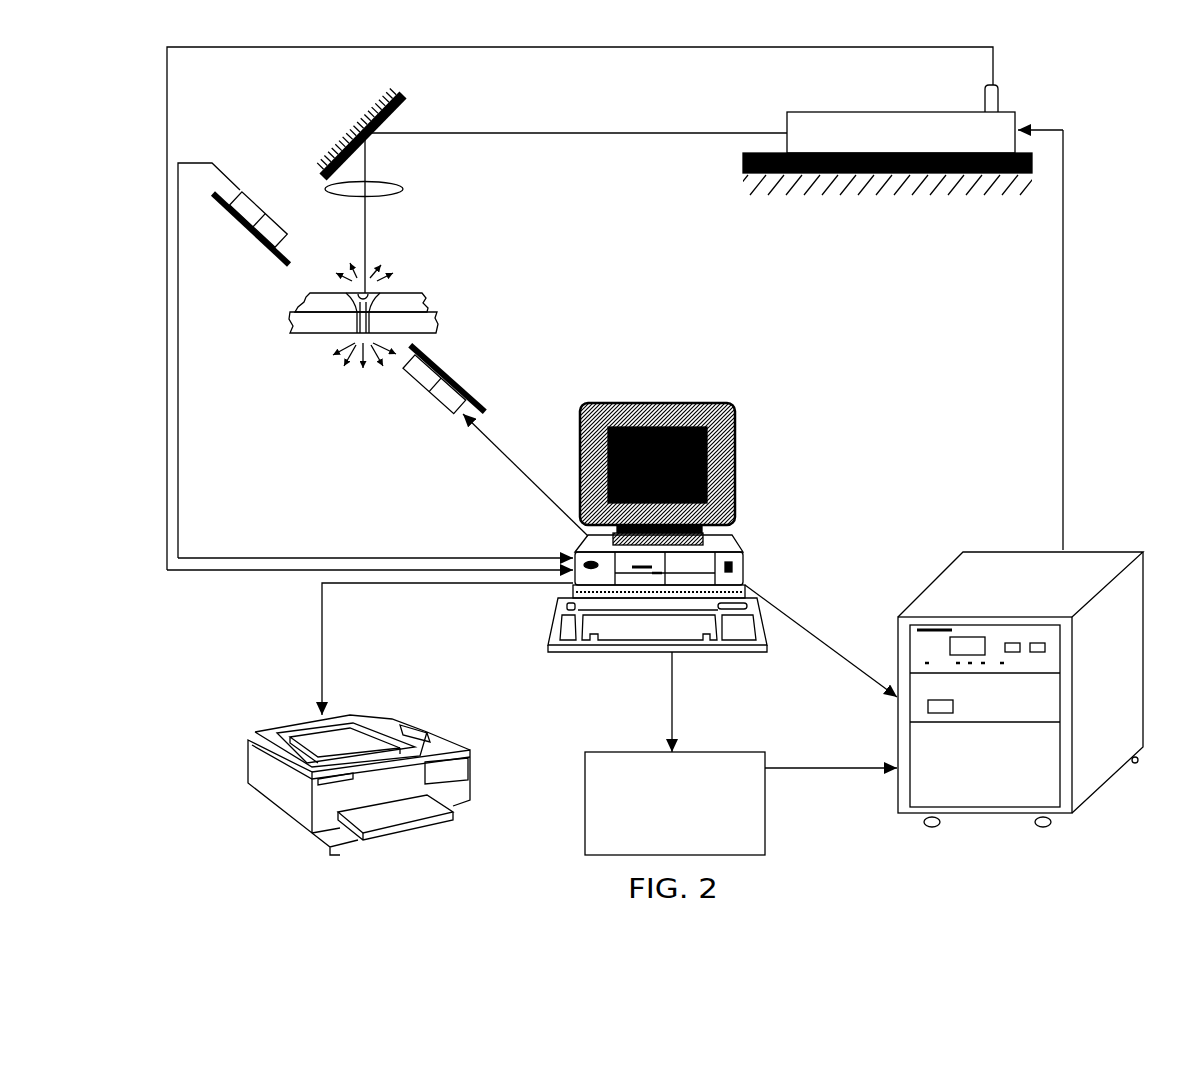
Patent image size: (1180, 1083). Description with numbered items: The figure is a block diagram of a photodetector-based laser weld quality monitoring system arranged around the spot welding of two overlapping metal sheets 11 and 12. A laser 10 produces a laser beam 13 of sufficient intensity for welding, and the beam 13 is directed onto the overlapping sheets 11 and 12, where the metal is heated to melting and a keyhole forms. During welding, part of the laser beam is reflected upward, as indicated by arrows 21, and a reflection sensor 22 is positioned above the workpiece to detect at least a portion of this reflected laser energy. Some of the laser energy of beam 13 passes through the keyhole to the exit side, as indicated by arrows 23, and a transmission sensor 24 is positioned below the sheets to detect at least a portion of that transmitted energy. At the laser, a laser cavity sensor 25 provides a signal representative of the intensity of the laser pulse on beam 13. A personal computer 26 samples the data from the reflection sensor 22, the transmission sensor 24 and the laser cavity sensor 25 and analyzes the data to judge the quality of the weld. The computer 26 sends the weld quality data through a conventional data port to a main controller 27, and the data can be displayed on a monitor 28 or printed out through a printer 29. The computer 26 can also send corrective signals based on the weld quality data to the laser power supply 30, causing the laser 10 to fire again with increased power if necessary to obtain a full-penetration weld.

The laser 10 is at (905, 102).
The metal sheet 11 is at (402, 302).
The metal sheet 12 is at (406, 332).
The laser beam 13 is at (576, 213).
The reflected laser energy arrows 21 is at (383, 272).
The reflection sensor 22 is at (268, 243).
The transmitted laser energy arrows 23 is at (355, 350).
The transmission sensor 24 is at (428, 383).
The laser cavity sensor 25 is at (997, 95).
The personal computer 26 is at (747, 560).
The main controller 27 is at (627, 783).
The monitor 28 is at (735, 452).
The printer 29 is at (295, 797).
The laser power supply 30 is at (933, 778).